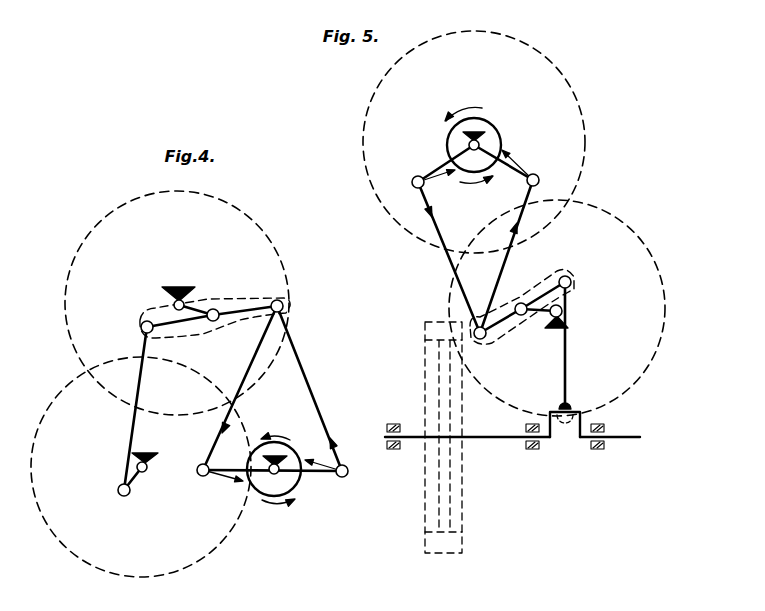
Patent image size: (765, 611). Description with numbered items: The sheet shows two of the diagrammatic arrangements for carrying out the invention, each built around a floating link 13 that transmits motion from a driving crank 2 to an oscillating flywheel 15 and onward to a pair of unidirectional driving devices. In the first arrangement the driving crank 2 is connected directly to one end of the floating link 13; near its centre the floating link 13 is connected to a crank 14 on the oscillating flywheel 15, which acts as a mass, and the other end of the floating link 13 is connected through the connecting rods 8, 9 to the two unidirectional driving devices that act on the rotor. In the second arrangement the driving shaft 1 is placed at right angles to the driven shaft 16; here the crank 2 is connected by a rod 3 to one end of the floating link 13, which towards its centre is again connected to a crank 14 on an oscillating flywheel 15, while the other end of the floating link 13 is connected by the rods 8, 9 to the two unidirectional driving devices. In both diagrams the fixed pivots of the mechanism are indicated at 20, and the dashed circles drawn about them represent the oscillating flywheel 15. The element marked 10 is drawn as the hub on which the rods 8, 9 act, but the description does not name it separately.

In FIG. 4, the driving shaft 1 is at (149, 474).
In FIG. 5, the driving shaft 1 is at (514, 440).
In FIG. 4, the driving crank 2 is at (130, 494).
In FIG. 5, the driving crank 2 is at (582, 426).
In FIG. 4, the rod 3 is at (143, 380).
In FIG. 5, the rod 3 is at (567, 353).
In FIG. 4, the connecting rod 8 is at (240, 392).
In FIG. 5, the connecting rod 8 is at (455, 271).
In FIG. 4, the connecting rod 9 is at (310, 382).
In FIG. 5, the connecting rod 9 is at (505, 265).
In FIG. 4, the driving disk 10 is at (299, 490).
In FIG. 5, the driving disk 10 is at (493, 127).
In FIG. 4, the floating link 13 is at (243, 302).
In FIG. 5, the floating link 13 is at (566, 293).
In FIG. 4, the crank 14 is at (199, 306).
In FIG. 5, the crank 14 is at (543, 313).
In FIG. 4, the oscillating flywheel 15 is at (267, 235).
In FIG. 5, the oscillating flywheel 15 is at (590, 203).
In FIG. 5, the driven shaft 16 is at (482, 142).
In FIG. 4, the fixed pivots 20 is at (177, 287).
In FIG. 5, the fixed pivots 20 is at (478, 132).